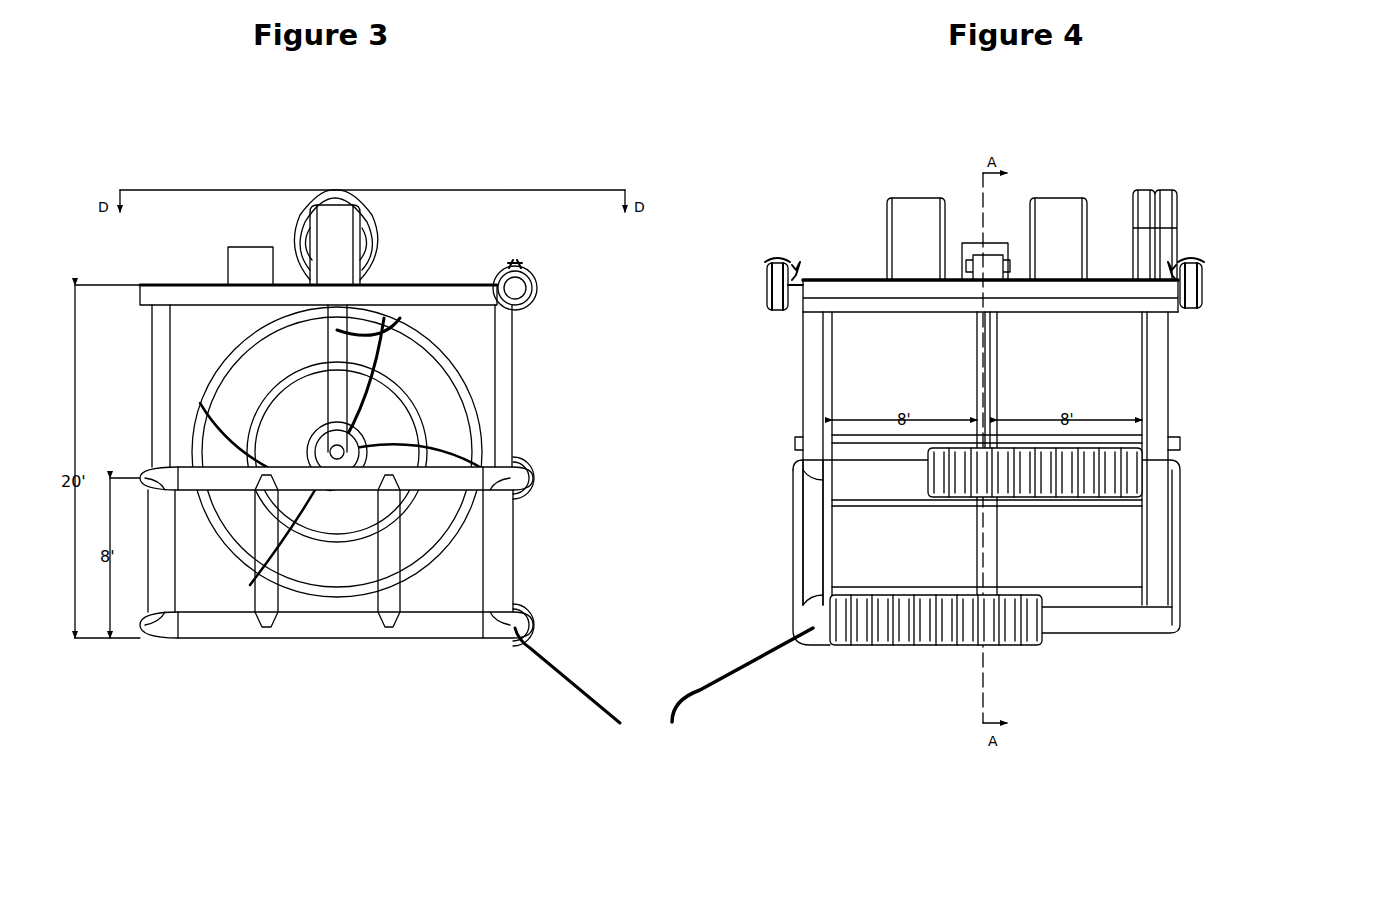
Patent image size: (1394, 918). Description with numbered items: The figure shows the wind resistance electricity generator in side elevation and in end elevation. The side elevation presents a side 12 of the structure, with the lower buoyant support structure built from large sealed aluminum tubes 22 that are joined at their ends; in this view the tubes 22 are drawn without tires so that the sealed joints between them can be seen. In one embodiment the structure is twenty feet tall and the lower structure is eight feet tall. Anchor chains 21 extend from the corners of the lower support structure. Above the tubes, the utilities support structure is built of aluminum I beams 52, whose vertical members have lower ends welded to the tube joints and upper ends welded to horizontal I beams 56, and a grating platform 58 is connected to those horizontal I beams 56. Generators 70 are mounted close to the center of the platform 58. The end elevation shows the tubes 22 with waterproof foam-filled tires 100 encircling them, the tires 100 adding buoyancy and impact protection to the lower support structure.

In FIG. 3, the side 12 is at (384, 188).
In FIG. 3, the anchor chain 21 is at (591, 701).
In FIG. 4, the anchor chain 21 is at (777, 653).
In FIG. 3, the aluminum tube 22 is at (533, 492).
In FIG. 4, the aluminum tube 22 is at (1196, 470).
In FIG. 3, the aluminum I beam 52 is at (520, 390).
In FIG. 4, the aluminum I beam 52 is at (748, 391).
In FIG. 3, the horizontal I beam 56 is at (525, 293).
In FIG. 4, the horizontal I beam 56 is at (798, 293).
In FIG. 3, the grating platform 58 is at (318, 295).
In FIG. 4, the grating platform 58 is at (1065, 280).
In FIG. 3, the generator 70 is at (338, 452).
In FIG. 4, the generator 70 is at (975, 213).
In FIG. 4, the tire 100 is at (999, 485).